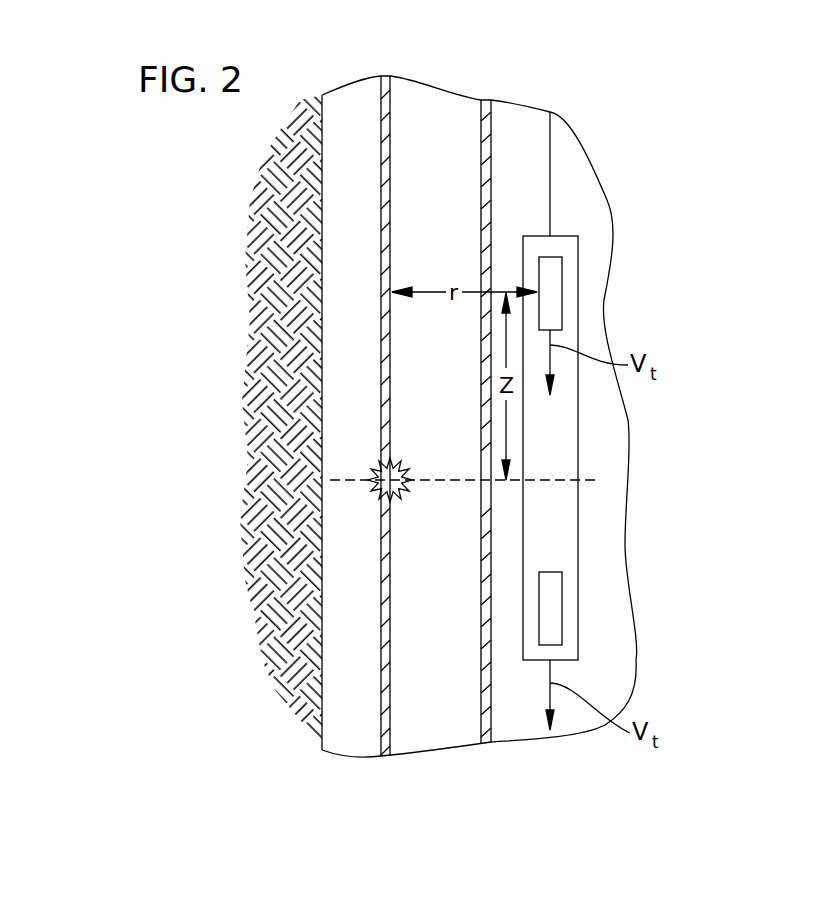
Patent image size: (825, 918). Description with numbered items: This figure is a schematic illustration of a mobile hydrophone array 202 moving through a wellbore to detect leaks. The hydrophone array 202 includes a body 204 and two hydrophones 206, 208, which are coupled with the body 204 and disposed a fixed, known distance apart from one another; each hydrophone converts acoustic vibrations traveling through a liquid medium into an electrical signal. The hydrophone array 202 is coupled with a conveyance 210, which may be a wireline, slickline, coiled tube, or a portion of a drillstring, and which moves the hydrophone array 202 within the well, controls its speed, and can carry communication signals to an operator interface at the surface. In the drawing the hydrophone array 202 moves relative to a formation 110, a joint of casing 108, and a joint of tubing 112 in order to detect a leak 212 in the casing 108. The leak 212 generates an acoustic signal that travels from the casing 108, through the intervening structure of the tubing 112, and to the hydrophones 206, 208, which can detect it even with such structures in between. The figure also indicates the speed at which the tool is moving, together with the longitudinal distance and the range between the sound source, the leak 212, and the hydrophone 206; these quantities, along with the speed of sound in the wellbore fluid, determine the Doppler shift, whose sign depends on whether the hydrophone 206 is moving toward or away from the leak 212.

The formation 110 is at (272, 680).
The joint of casing 108 is at (387, 745).
The joint of tubing 112 is at (489, 742).
The conveyance 210 is at (550, 160).
The mobile hydrophone array 202 is at (625, 448).
The body 204 is at (578, 415).
The hydrophone 206 is at (562, 268).
The hydrophone 208 is at (562, 592).
The leak 212 is at (399, 462).